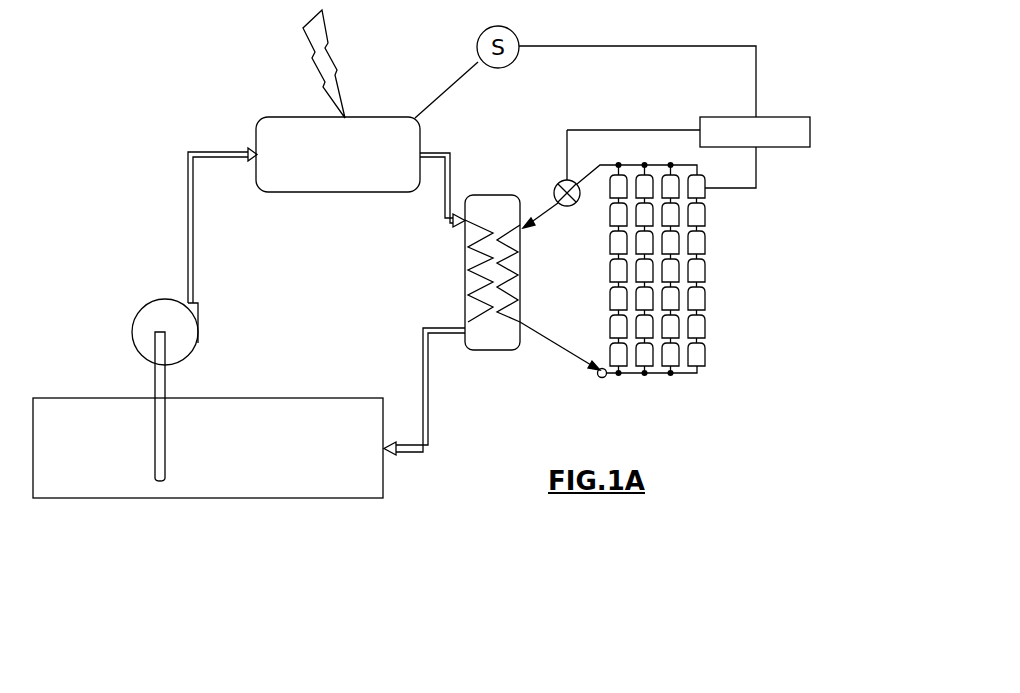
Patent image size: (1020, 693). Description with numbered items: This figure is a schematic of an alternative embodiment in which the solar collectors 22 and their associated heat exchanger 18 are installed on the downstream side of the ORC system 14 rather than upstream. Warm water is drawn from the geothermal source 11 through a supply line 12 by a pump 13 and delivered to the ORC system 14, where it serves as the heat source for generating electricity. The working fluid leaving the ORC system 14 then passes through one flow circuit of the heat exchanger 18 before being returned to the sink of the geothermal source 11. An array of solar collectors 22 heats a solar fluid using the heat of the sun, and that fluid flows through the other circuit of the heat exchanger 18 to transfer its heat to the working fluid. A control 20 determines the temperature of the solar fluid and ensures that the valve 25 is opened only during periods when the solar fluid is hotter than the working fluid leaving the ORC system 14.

The geothermal source 11 is at (288, 487).
The supply line 12 is at (162, 385).
The pump 13 is at (188, 328).
The ORC system 14 is at (378, 125).
The first heat exchanger 18 is at (498, 200).
The control 20 is at (783, 117).
The solar collectors 22 is at (703, 243).
The valve 25 is at (567, 213).